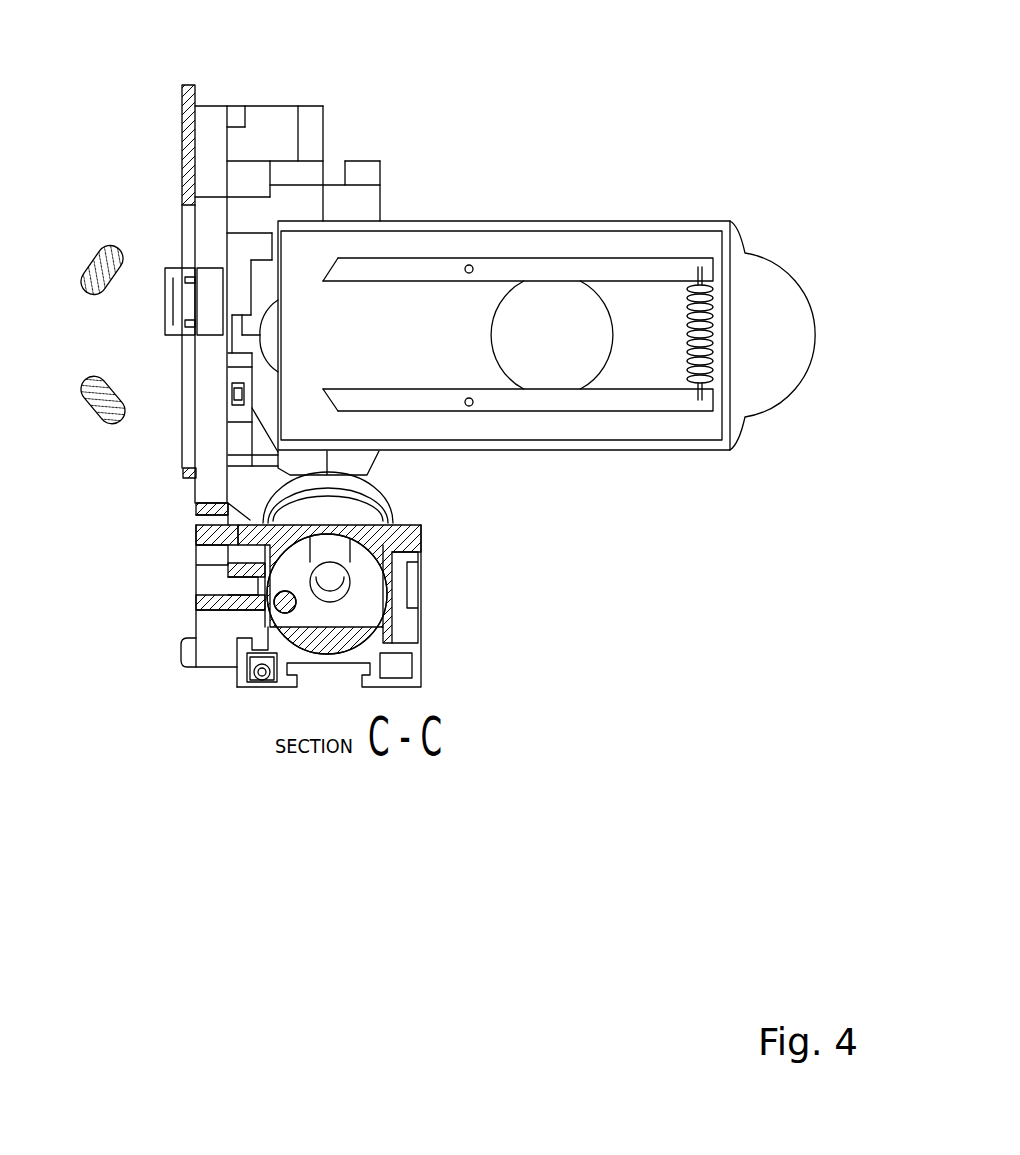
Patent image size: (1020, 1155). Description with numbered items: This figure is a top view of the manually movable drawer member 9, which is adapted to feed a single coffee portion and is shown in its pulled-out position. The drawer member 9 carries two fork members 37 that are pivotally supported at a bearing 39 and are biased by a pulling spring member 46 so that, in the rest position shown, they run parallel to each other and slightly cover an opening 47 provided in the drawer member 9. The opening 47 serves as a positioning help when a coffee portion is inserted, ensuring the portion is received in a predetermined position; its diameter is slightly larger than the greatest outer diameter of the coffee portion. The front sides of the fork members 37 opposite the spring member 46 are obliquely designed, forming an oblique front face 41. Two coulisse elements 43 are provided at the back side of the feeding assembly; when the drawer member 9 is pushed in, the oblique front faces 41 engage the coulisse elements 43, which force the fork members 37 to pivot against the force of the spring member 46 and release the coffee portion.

The drawer member 9 is at (730, 221).
The fork members 37 is at (637, 265).
The bearing 39 is at (469, 264).
The oblique front face 41 is at (332, 265).
The coulisse elements 43 is at (98, 267).
The pulling spring member 46 is at (713, 322).
The opening 47 is at (570, 352).